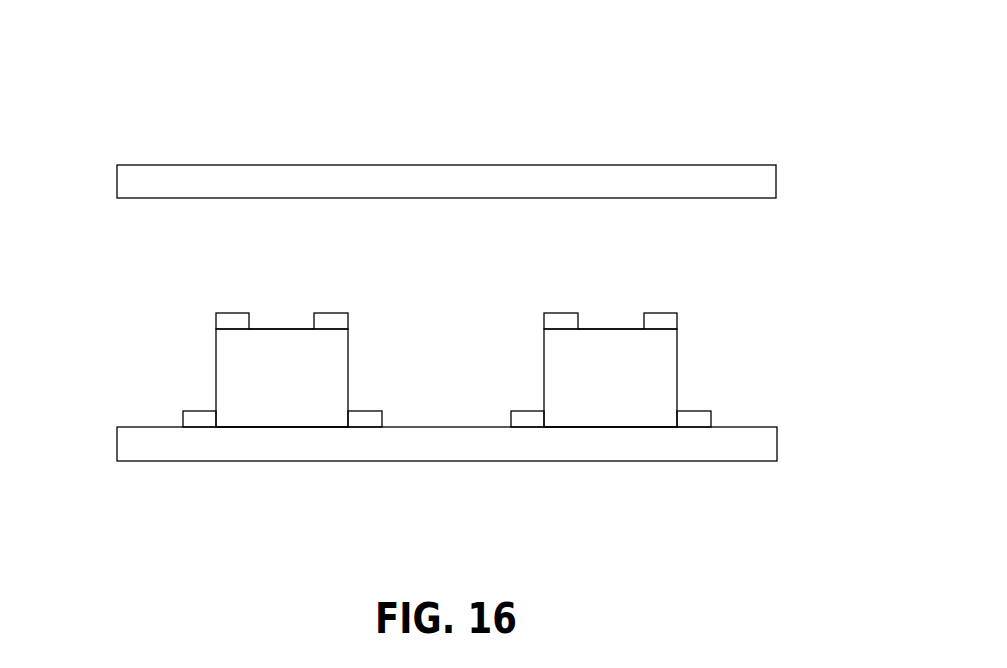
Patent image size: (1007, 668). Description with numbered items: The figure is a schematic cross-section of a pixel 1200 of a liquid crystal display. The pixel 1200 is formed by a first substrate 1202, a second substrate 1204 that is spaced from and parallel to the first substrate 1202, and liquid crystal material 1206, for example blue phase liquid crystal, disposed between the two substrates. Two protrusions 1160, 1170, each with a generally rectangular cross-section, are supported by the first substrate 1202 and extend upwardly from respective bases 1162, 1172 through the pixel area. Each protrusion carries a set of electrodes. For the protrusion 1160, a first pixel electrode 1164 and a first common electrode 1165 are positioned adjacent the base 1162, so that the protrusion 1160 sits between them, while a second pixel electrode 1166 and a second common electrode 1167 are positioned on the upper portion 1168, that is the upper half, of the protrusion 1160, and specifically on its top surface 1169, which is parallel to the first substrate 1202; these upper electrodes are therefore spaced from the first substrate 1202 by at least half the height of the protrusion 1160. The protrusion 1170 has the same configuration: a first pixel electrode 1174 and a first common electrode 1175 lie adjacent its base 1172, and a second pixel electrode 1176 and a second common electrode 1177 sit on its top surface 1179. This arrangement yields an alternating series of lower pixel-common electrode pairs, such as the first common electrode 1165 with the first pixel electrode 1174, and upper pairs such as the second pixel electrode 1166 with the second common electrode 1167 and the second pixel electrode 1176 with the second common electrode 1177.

The pixel 1200 is at (802, 98).
The first substrate 1202 is at (135, 426).
The second substrate 1204 is at (150, 199).
The liquid crystal material 1206 is at (763, 282).
The protrusion 1160 is at (282, 378).
The base 1162 is at (282, 428).
The first pixel electrode 1164 is at (199, 411).
The first common electrode 1165 is at (365, 411).
The second pixel electrode 1166 is at (233, 313).
The second common electrode 1167 is at (332, 313).
The upper portion 1168 is at (195, 345).
The top surface 1169 is at (256, 329).
The protrusion 1170 is at (610, 378).
The base 1172 is at (611, 428).
The first pixel electrode 1174 is at (529, 411).
The first common electrode 1175 is at (694, 411).
The second pixel electrode 1176 is at (561, 313).
The second common electrode 1177 is at (660, 313).
The top surface of second chip 1179 is at (584, 329).